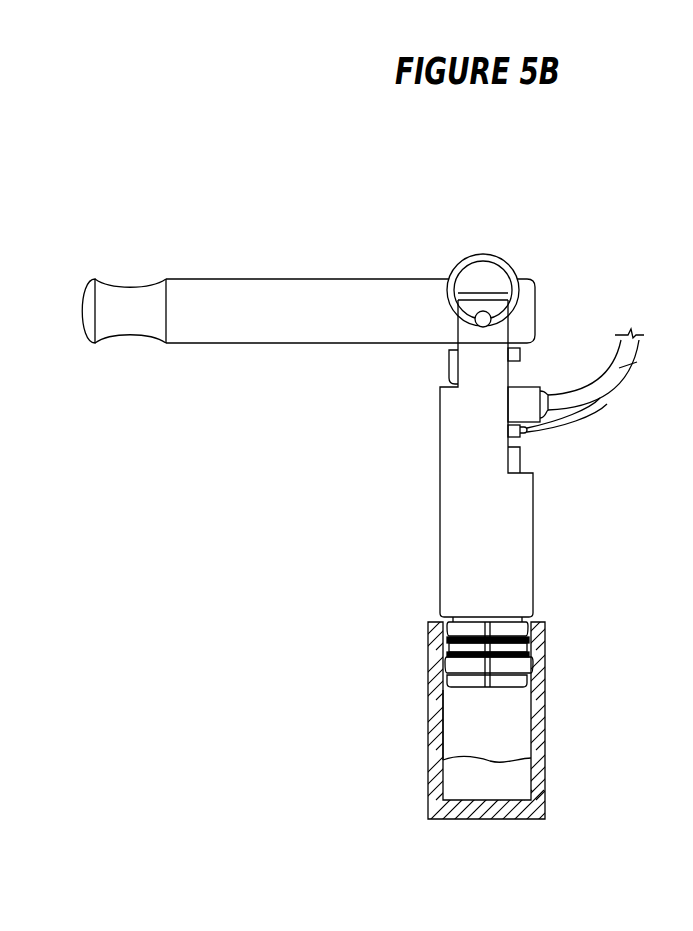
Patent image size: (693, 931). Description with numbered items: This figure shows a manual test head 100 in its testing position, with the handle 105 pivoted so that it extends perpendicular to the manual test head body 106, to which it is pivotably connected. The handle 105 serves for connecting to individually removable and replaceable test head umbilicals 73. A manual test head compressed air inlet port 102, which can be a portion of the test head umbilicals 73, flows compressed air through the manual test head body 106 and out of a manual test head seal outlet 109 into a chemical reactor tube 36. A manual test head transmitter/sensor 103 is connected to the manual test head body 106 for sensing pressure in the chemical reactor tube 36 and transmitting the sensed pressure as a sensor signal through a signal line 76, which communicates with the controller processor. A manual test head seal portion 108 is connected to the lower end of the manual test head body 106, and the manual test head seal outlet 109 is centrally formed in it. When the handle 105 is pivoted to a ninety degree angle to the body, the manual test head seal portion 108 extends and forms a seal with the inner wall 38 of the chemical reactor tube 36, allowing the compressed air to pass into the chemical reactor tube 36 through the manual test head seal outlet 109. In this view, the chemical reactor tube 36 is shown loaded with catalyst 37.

The manual test head 100 is at (156, 186).
The handle 105 is at (325, 279).
The manual test head body 106 is at (440, 500).
The manual test head compressed air inlet port 102 is at (522, 387).
The test head umbilicals 73 is at (642, 352).
The signal line 76 is at (570, 427).
The manual test head transmitter/sensor 103 is at (513, 441).
The chemical reactor tube 36 is at (428, 645).
The manual test head seal portion 108 is at (535, 668).
The manual test head seal outlet 109 is at (488, 692).
The inner wall 38 is at (443, 710).
The catalyst 37 is at (456, 757).